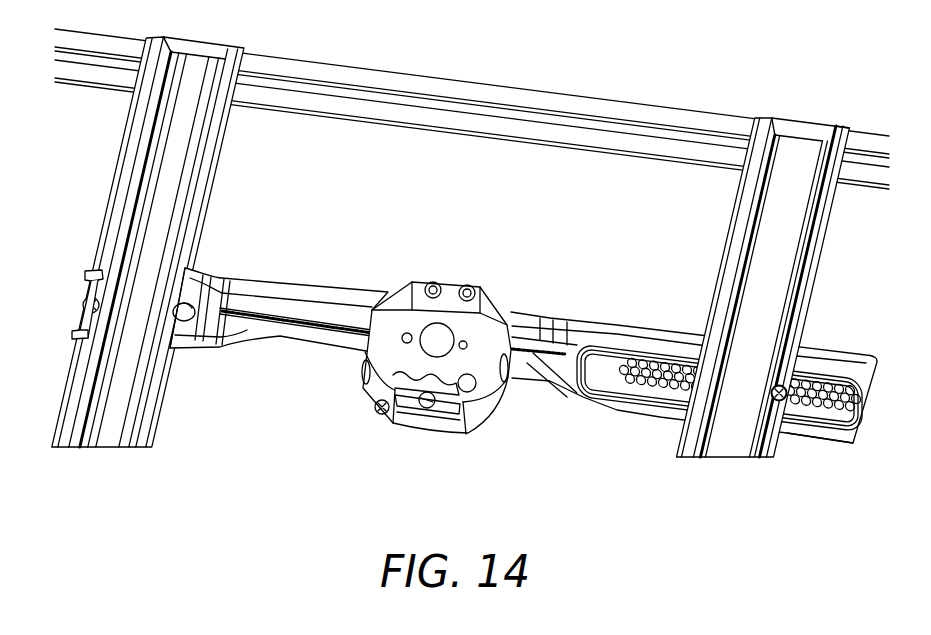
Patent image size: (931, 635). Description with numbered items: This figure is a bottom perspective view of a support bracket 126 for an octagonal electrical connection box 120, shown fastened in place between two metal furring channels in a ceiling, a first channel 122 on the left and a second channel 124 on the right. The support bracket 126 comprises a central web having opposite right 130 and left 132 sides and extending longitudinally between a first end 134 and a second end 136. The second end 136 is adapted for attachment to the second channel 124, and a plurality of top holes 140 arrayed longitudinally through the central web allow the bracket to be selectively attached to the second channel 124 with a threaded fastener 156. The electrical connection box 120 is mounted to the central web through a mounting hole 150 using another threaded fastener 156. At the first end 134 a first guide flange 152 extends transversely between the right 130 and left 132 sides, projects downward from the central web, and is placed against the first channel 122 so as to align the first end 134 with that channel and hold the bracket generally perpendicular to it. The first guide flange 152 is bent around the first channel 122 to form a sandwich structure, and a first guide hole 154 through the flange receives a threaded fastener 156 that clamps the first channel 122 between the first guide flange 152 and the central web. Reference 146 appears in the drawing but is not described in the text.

The electrical connection box 120 is at (490, 298).
The first channel 122 is at (172, 173).
The second channel 124 is at (790, 203).
The support bracket 126 is at (468, 228).
The right side 130 is at (279, 305).
The left side 132 is at (235, 343).
The first end 134 is at (85, 292).
The second end 136 is at (857, 350).
The top holes 140 is at (667, 360).
The arm surface 146 is at (300, 290).
The mounting hole 150 is at (297, 335).
The first guide flange 152 is at (59, 282).
The first guide hole 154 is at (73, 327).
The threaded fastener 156 is at (782, 402).